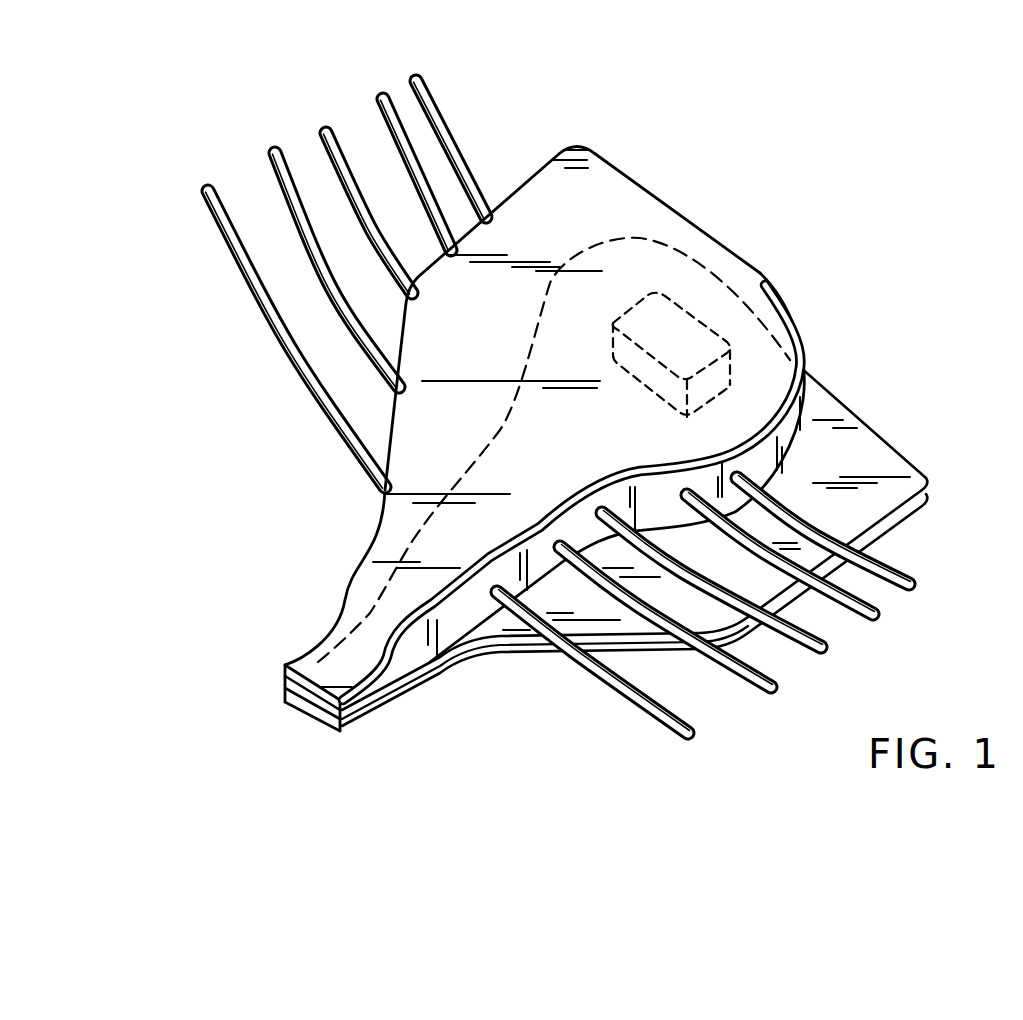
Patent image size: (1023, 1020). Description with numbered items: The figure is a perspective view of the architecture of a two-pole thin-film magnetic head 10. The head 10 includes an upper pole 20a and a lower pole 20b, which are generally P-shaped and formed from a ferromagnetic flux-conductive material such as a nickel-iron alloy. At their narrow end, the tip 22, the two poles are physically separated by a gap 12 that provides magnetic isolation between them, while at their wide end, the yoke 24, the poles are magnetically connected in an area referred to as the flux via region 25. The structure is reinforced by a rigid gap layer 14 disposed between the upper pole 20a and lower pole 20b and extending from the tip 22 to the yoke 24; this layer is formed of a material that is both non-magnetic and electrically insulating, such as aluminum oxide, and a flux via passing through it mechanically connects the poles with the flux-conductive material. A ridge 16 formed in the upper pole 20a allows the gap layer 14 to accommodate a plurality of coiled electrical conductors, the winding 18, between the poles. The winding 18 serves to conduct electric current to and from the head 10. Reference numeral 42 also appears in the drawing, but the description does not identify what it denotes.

The thin-film magnetic head 10 is at (891, 117).
The gap 12 is at (288, 702).
The gap layer 14 is at (653, 500).
The ridge 16 is at (407, 647).
The winding 18 is at (688, 742).
The upper pole 20a is at (617, 166).
The lower pole 20b is at (904, 452).
The tip 22 is at (343, 735).
The yoke 24 is at (685, 364).
The flux via region 25 is at (690, 345).
The sloped surface 42 is at (507, 235).